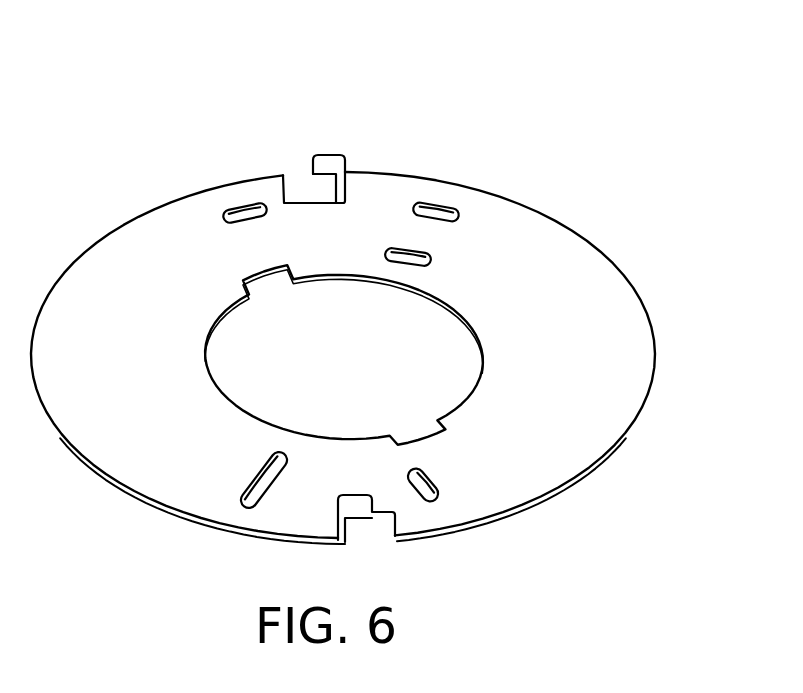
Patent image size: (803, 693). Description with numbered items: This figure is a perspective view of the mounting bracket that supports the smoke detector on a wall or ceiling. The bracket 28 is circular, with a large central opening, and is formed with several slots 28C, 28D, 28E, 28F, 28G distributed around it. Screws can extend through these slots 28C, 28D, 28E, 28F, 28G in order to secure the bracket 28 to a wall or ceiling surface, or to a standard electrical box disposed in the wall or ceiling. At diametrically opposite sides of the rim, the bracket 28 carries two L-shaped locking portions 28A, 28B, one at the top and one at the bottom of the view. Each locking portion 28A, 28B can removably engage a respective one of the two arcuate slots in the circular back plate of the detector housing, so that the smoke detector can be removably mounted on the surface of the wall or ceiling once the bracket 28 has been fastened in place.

The circular bracket 28 is at (630, 336).
The L-shaped locking portion 28A is at (353, 505).
The L-shaped locking portion 28B is at (321, 163).
The slot 28C is at (237, 211).
The slot 28D is at (455, 213).
The slot 28E is at (398, 255).
The slot 28F is at (430, 495).
The slot 28G is at (250, 500).